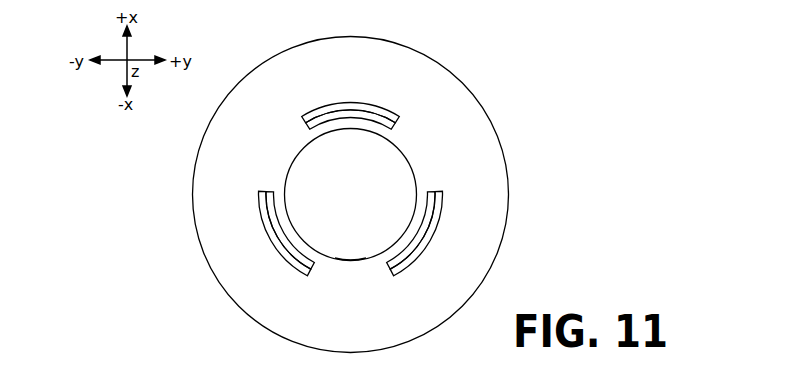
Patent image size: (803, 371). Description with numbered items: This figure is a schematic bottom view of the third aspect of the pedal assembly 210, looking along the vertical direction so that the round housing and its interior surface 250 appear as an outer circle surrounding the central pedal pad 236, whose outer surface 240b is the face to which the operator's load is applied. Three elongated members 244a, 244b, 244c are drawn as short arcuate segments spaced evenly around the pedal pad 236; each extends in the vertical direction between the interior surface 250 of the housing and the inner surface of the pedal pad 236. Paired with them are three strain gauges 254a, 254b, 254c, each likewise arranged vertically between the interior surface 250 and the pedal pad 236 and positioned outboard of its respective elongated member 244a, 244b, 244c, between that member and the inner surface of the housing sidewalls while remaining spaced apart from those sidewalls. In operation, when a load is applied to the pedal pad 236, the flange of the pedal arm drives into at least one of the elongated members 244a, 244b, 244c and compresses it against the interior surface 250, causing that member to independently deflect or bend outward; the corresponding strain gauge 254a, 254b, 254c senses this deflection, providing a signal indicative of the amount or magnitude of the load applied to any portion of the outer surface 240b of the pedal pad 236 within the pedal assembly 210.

The pedal assembly 210 is at (532, 86).
The interior surface 250 is at (273, 146).
The outer surface 240b is at (375, 204).
The pedal pad 236 is at (352, 242).
The strain gauge 254a is at (337, 102).
The elongated member 244a is at (365, 106).
The strain gauge 254b is at (480, 202).
The elongated member 244b is at (430, 231).
The strain gauge 254c is at (272, 240).
The elongated member 244c is at (263, 220).